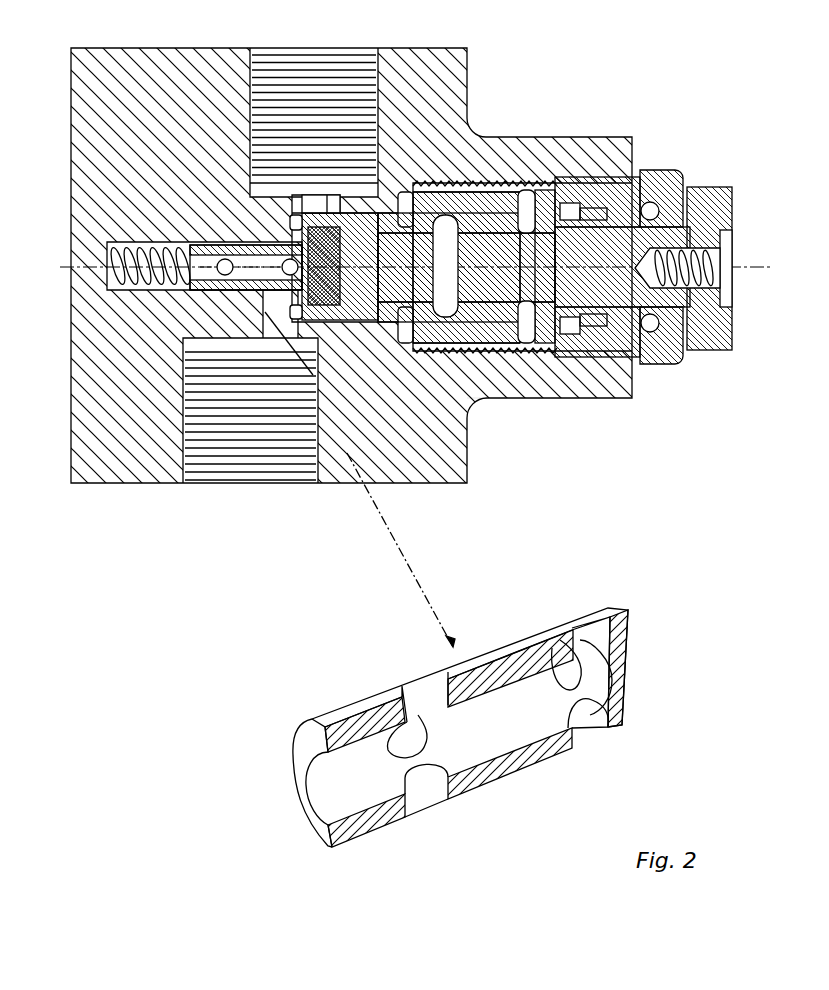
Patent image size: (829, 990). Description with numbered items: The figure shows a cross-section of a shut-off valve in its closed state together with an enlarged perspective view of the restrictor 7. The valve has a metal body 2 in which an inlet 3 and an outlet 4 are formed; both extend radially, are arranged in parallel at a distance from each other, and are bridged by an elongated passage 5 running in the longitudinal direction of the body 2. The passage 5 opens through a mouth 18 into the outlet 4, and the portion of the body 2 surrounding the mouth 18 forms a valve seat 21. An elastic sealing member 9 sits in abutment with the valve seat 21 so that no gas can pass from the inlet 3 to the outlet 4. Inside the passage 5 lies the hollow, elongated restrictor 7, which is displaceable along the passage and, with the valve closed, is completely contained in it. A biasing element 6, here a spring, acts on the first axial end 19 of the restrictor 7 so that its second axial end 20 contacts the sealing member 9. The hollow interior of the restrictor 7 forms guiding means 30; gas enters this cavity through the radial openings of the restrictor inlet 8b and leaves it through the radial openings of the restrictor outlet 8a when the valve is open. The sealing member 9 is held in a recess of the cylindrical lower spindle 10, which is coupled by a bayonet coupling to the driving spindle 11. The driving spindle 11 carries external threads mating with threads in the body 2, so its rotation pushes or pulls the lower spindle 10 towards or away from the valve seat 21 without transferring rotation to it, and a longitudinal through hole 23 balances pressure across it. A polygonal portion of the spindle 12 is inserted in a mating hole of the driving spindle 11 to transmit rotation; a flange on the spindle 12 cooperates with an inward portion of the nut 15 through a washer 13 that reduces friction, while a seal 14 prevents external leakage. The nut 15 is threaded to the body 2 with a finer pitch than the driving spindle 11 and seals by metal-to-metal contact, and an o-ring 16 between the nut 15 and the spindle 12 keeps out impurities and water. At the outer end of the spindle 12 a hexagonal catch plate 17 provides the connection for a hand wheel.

The body 2 is at (160, 48).
The inlet 3 is at (230, 455).
The outlet 4 is at (302, 48).
The passage 5 is at (287, 250).
The biasing element 6 is at (104, 264).
The restrictor 7 is at (200, 274).
The restrictor outlet 8a is at (585, 712).
The restrictor inlet 8b is at (425, 782).
The sealing member 9 is at (467, 447).
The lower spindle 10 is at (357, 185).
The driving spindle 11 is at (482, 184).
The spindle 12 is at (548, 204).
The washer 13 is at (575, 208).
The seal 14 is at (650, 200).
The nut 15 is at (672, 178).
The o-ring 16 is at (655, 360).
The catch plate 17 is at (720, 190).
The mouth 18 is at (310, 288).
The first axial end 19 is at (290, 745).
The second axial end 20 is at (630, 672).
The valve seat 21 is at (300, 243).
The through hole 23 is at (463, 345).
The guiding means 30 is at (328, 788).